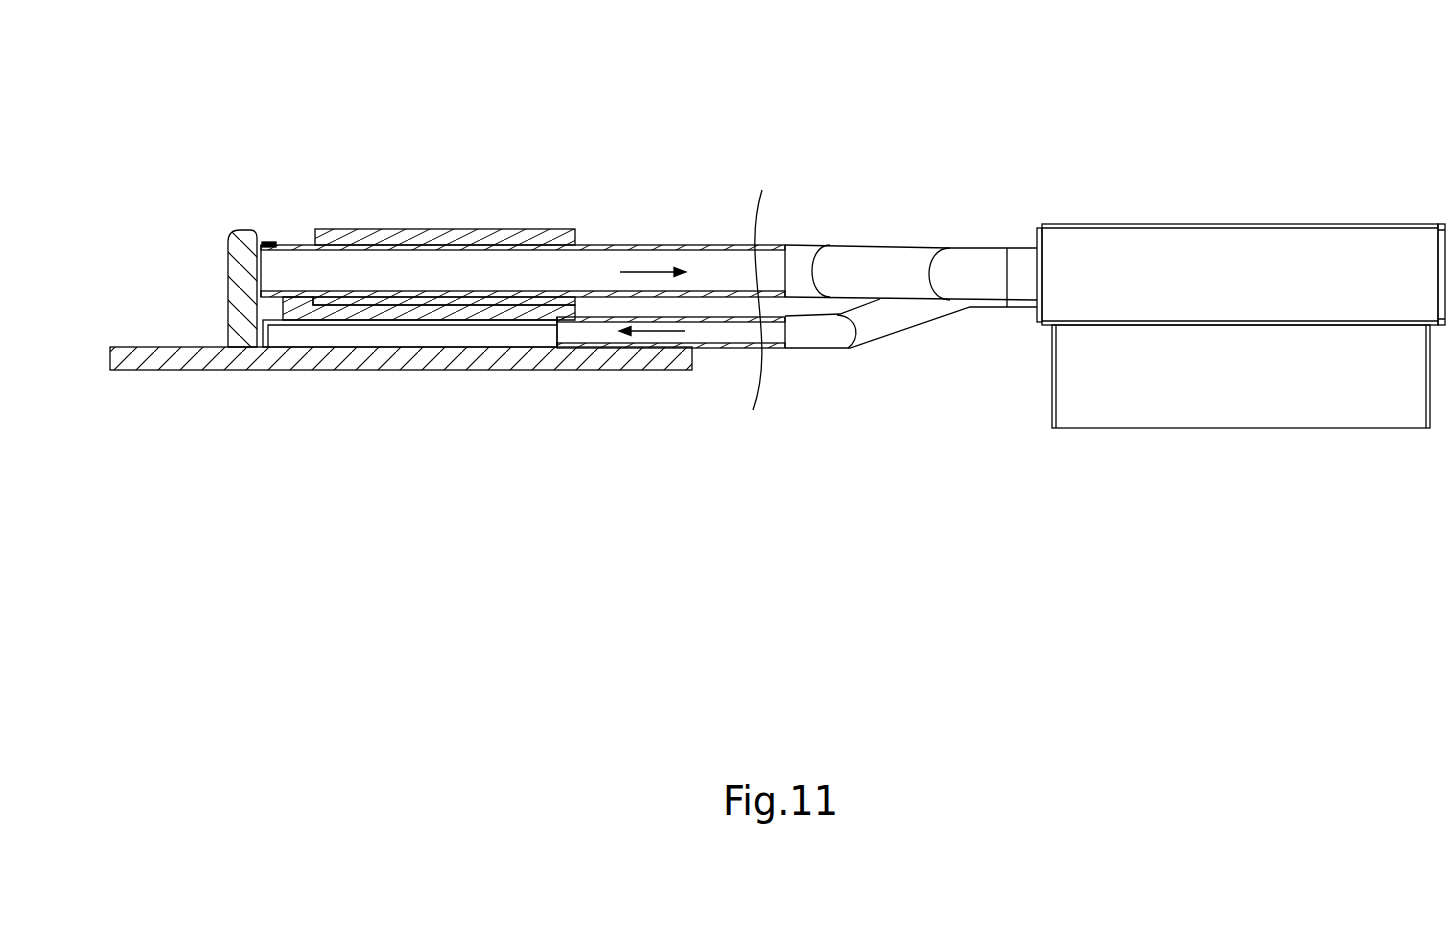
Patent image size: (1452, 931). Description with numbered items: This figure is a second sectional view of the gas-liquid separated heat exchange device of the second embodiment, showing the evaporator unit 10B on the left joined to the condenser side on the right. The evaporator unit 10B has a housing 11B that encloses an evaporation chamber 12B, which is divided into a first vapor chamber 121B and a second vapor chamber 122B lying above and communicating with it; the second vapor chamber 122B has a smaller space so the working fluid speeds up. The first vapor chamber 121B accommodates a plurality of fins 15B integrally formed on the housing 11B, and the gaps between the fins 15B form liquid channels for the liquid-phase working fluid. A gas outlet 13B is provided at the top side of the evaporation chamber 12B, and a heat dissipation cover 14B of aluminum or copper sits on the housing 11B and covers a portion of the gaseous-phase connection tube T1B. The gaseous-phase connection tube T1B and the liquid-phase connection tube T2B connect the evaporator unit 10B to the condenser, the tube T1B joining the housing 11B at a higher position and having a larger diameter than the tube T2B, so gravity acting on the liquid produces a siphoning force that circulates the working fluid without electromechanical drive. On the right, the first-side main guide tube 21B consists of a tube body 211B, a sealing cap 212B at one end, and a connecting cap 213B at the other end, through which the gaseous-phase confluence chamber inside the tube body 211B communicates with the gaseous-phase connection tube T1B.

The evaporator unit 10B is at (410, 378).
The housing 11B is at (238, 272).
The evaporation chamber 12B is at (332, 433).
The first vapor chamber 121B is at (330, 325).
The second vapor chamber 122B is at (275, 310).
The gas outlet 13B is at (272, 243).
The heat dissipation cover 14B is at (449, 222).
The fins 15B is at (512, 340).
The gaseous-phase connection tube T1B is at (838, 263).
The liquid-phase connection tube T2B is at (823, 330).
The first-side main guide tube 21B is at (1177, 261).
The tube body 211B is at (1087, 265).
The sealing cap 212B is at (1440, 257).
The connecting cap 213B is at (1033, 227).